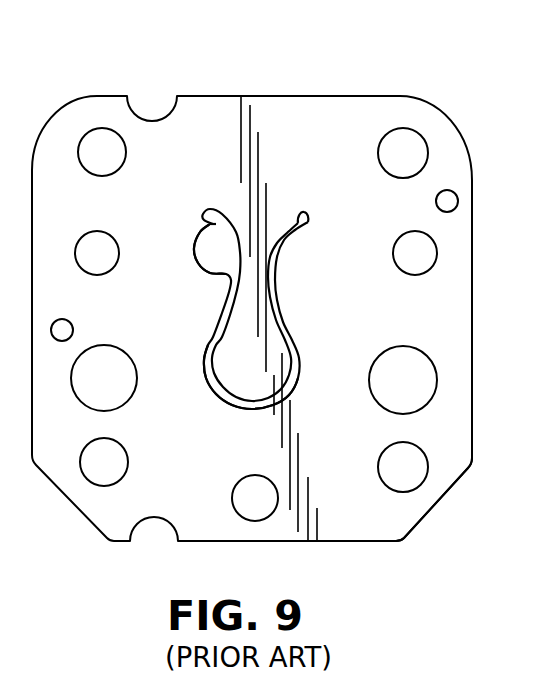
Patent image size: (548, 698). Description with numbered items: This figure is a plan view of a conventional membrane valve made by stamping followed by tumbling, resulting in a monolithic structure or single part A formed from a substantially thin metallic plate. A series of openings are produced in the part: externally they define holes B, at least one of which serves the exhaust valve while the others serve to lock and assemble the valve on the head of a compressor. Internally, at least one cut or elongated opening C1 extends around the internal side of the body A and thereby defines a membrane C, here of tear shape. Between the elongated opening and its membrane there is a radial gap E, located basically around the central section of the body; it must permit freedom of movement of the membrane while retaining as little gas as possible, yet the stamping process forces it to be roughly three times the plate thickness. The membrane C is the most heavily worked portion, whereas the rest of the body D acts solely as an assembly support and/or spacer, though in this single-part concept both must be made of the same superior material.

The single part A is at (432, 91).
The holes B is at (430, 255).
The membrane C is at (211, 335).
The cut or elongated opening C1 is at (212, 243).
The rest of the body D is at (383, 513).
The radial gap E is at (231, 401).